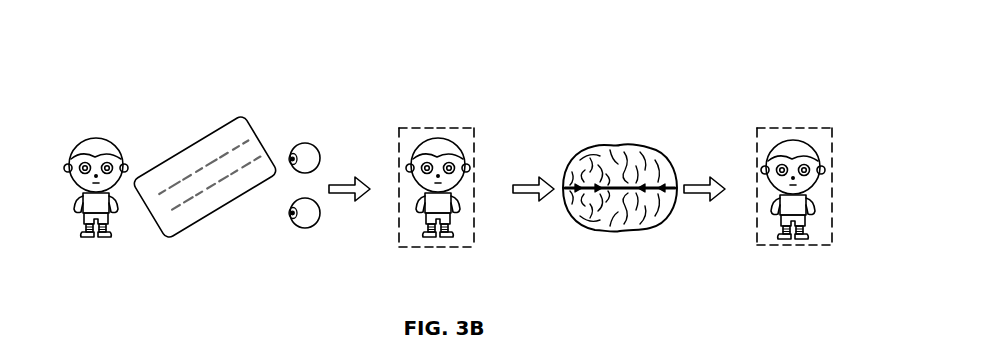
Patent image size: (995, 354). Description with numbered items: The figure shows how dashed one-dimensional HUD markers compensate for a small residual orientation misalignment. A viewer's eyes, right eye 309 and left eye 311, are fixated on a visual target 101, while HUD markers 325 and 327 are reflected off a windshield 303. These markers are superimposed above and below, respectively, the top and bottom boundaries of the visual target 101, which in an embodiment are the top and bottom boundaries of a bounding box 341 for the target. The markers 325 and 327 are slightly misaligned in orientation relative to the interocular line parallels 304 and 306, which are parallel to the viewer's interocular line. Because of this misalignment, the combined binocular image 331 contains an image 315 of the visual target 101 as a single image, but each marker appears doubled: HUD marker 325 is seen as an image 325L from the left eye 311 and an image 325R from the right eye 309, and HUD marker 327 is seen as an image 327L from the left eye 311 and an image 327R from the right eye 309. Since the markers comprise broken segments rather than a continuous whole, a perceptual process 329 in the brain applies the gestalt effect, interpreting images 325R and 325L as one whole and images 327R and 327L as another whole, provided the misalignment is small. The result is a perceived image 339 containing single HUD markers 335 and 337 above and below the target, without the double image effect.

The visual target 101 is at (98, 136).
The windshield 303 is at (214, 130).
The interocular line parallel 304 is at (157, 183).
The interocular line parallel 306 is at (241, 172).
The right eye 309 is at (302, 142).
The left eye 311 is at (310, 228).
The image 315 is at (463, 158).
The HUD marker 325 is at (153, 190).
The HUD marker 327 is at (176, 220).
The image from right eye 325R is at (387, 130).
The image from left eye 325L is at (489, 124).
The image from right eye 327R is at (387, 252).
The image from left eye 327L is at (493, 243).
The perceptual process 329 is at (601, 147).
The perceived image frame 331 is at (437, 100).
The HUD marker 335 is at (742, 128).
The HUD marker 337 is at (732, 243).
The perceived image 339 is at (787, 108).
The bounding box 341 is at (398, 146).